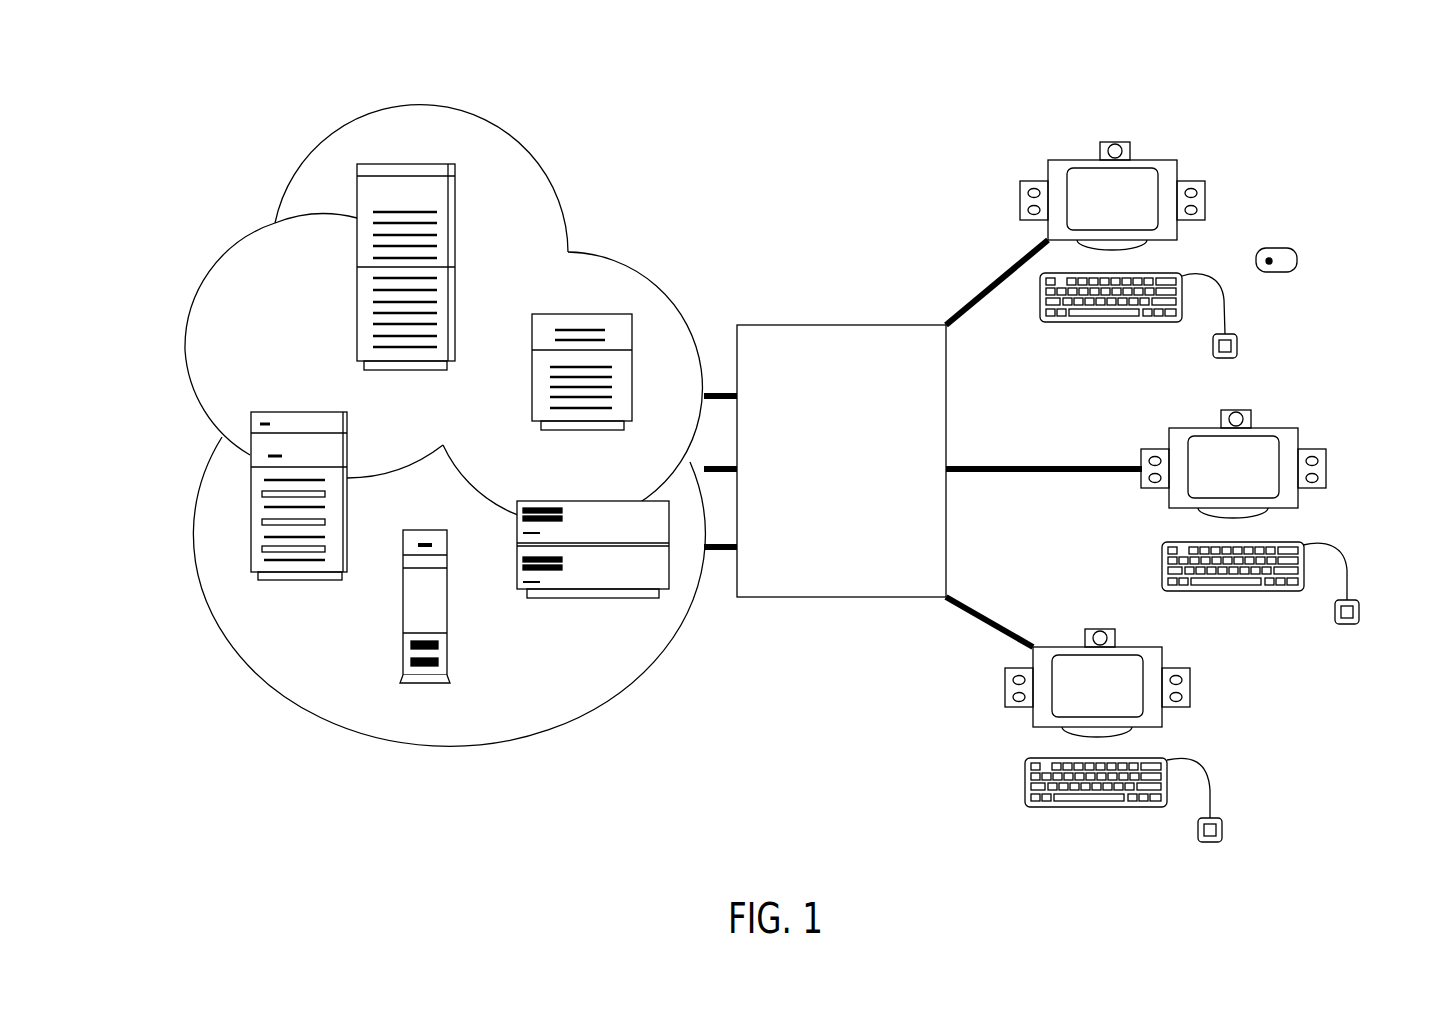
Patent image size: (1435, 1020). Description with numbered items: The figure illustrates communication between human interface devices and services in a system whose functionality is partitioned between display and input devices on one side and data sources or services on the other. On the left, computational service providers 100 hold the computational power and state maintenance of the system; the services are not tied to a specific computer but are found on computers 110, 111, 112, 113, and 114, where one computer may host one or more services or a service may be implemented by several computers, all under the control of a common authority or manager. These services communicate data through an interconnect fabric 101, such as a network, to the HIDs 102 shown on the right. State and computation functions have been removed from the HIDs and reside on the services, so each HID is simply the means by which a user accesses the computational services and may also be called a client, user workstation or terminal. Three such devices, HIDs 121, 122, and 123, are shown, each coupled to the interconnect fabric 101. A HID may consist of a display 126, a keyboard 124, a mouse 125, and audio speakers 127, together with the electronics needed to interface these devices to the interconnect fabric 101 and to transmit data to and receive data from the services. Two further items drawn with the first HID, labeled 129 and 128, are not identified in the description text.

The computational service providers 100 is at (663, 57).
The interconnect fabric 101 is at (828, 598).
The HIDs 102 is at (1290, 55).
The computer 110 is at (455, 163).
The computer 111 is at (630, 314).
The computer 112 is at (670, 589).
The computer 113 is at (398, 683).
The computer 114 is at (251, 413).
The HID 121 is at (1149, 176).
The HID 122 is at (1278, 436).
The HID 123 is at (1163, 646).
The keyboard 124 is at (1087, 323).
The mouse 125 is at (1237, 343).
The display 126 is at (1080, 166).
The audio speakers 127 is at (1157, 200).
The microphone 128 is at (1297, 258).
The camera 129 is at (1153, 134).